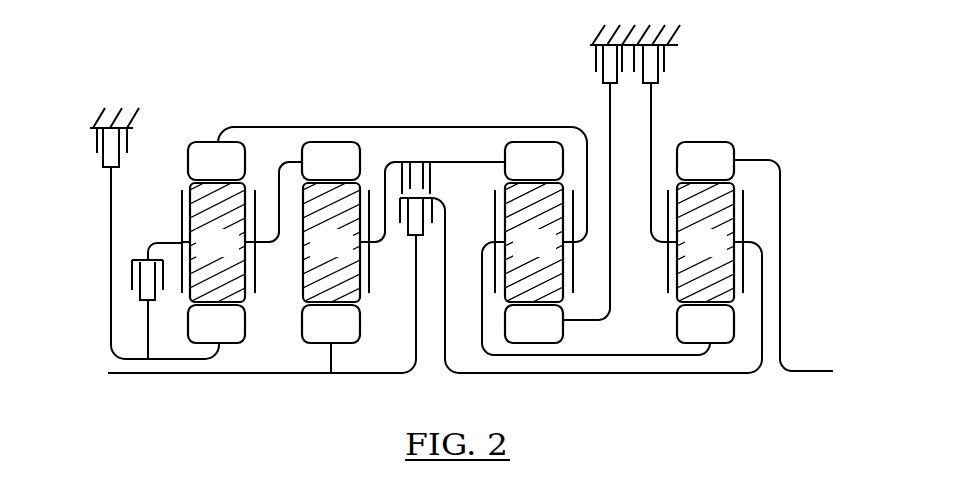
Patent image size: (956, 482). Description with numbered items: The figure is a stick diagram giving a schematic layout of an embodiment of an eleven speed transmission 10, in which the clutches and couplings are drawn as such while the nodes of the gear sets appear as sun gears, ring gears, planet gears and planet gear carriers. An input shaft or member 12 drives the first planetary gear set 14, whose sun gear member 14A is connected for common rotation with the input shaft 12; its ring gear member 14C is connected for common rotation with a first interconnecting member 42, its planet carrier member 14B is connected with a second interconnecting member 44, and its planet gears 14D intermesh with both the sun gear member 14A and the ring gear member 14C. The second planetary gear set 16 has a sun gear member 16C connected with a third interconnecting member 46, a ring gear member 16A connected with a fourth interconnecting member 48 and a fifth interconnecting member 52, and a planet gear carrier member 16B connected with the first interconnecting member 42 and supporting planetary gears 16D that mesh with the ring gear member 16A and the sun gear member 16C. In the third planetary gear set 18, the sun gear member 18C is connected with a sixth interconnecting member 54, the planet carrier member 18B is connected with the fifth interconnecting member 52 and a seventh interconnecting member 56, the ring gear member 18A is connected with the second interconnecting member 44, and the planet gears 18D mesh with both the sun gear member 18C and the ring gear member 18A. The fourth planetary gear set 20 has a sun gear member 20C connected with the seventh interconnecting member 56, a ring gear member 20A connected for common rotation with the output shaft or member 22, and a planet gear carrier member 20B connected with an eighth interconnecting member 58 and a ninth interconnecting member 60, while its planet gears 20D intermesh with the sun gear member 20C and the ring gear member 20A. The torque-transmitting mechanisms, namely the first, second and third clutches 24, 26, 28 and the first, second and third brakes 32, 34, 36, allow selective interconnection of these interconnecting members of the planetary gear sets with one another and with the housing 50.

The eleven speed transmission 10 is at (746, 51).
The input shaft 12 is at (130, 374).
The first planetary gear set 14 is at (335, 136).
The sun gear member 14A is at (312, 335).
The planet gear carrier member 14B is at (370, 280).
The ring gear member 14C is at (312, 172).
The planet gears 14D is at (312, 254).
The second planetary gear set 16 is at (207, 136).
The ring gear member 16A is at (198, 172).
The planet gear carrier member 16B is at (256, 278).
The sun gear member 16C is at (198, 335).
The planetary gears 16D is at (198, 254).
The third planetary gear set 18 is at (519, 137).
The ring gear member 18A is at (515, 172).
The planet gear carrier member 18B is at (573, 280).
The sun gear member 18C is at (515, 335).
The planet gears 18D is at (515, 254).
The fourth planetary gear set 20 is at (727, 128).
The ring gear member 20A is at (687, 172).
The planet gear carrier member 20B is at (743, 210).
The sun gear member 20C is at (687, 335).
The planet gears 20D is at (687, 254).
The output shaft 22 is at (757, 160).
The first clutch 24 is at (400, 222).
The second clutch 26 is at (432, 175).
The third clutch 28 is at (132, 272).
The first brake 32 is at (665, 62).
The second brake 34 is at (596, 62).
The third brake 36 is at (98, 150).
The first interconnecting member 42 is at (279, 185).
The second interconnecting member 44 is at (384, 175).
The third interconnecting member 46 is at (179, 361).
The fourth interconnecting member 48 is at (172, 242).
The housing 50 is at (132, 120).
The fifth interconnecting member 52 is at (400, 127).
The sixth interconnecting member 54 is at (611, 113).
The seventh interconnecting member 56 is at (602, 357).
The eighth interconnecting member 58 is at (445, 353).
The ninth interconnecting member 60 is at (652, 112).